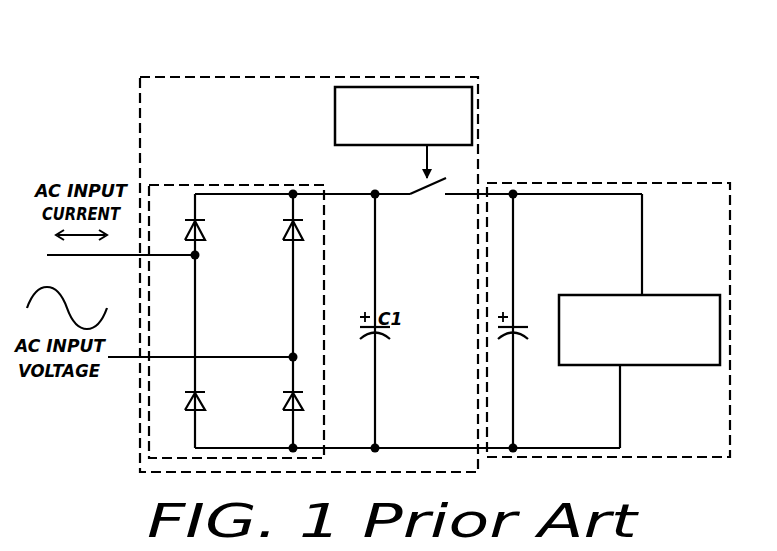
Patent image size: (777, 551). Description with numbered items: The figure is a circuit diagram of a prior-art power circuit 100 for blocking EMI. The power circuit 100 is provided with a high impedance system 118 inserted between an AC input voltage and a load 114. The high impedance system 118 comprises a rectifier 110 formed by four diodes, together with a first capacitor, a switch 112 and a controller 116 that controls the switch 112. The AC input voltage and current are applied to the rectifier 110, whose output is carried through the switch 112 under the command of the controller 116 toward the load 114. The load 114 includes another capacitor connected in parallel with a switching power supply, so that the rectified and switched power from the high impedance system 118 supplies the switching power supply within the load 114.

The power circuit 100 is at (186, 42).
The rectifier 110 is at (233, 184).
The switch 112 is at (430, 200).
The load 114 is at (597, 183).
The controller 116 is at (360, 85).
The high impedance system 118 is at (457, 76).